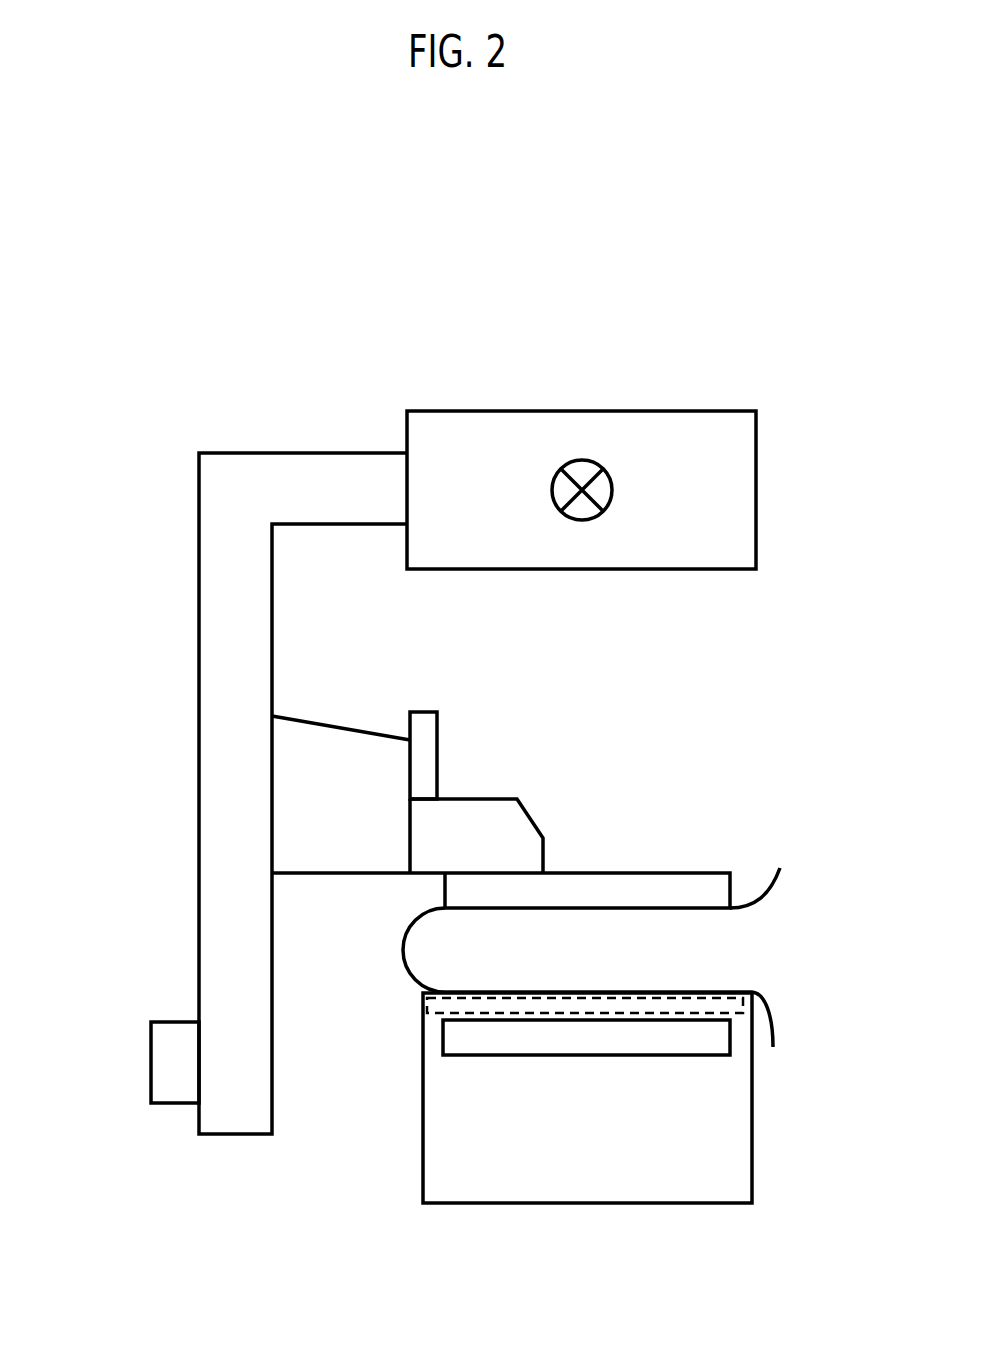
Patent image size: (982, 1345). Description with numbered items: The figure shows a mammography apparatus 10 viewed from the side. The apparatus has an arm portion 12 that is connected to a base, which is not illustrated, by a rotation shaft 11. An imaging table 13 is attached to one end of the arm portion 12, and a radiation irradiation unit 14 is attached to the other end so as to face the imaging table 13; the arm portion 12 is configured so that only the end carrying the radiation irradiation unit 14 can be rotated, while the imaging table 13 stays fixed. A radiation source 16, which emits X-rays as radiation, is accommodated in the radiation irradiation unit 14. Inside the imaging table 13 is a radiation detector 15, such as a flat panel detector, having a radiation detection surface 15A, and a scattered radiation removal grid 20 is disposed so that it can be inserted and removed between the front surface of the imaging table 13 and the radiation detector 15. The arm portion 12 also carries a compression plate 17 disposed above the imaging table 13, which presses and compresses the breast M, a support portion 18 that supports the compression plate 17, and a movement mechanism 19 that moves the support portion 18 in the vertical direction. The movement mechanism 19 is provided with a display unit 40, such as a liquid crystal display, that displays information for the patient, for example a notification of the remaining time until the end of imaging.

The mammography apparatus 10 is at (480, 332).
The rotation shaft 11 is at (164, 1040).
The arm portion 12 is at (213, 673).
The imaging table 13 is at (483, 1192).
The radiation irradiation unit 14 is at (682, 426).
The radiation detector 15 is at (673, 1045).
The radiation detection surface 15A is at (703, 1020).
The radiation source 16 is at (584, 460).
The compression plate 17 is at (686, 888).
The support portion 18 is at (478, 812).
The movement mechanism 19 is at (360, 742).
The scattered radiation removal grid 20 is at (418, 1003).
The display unit 40 is at (424, 722).
The breast M is at (425, 933).